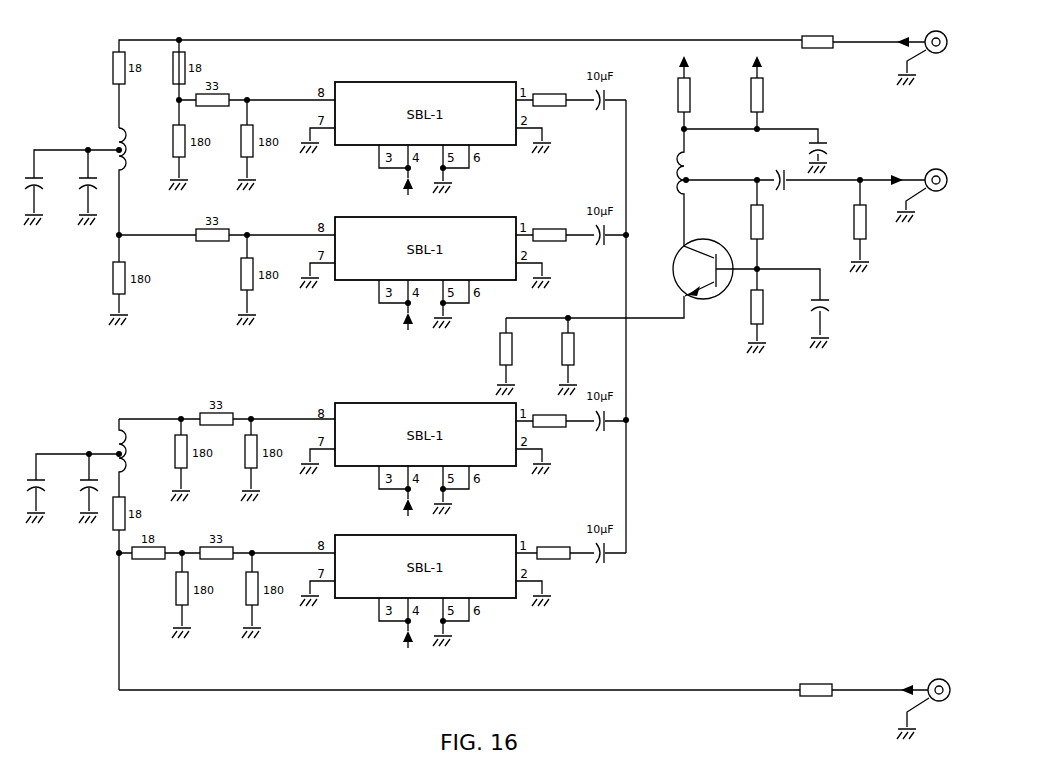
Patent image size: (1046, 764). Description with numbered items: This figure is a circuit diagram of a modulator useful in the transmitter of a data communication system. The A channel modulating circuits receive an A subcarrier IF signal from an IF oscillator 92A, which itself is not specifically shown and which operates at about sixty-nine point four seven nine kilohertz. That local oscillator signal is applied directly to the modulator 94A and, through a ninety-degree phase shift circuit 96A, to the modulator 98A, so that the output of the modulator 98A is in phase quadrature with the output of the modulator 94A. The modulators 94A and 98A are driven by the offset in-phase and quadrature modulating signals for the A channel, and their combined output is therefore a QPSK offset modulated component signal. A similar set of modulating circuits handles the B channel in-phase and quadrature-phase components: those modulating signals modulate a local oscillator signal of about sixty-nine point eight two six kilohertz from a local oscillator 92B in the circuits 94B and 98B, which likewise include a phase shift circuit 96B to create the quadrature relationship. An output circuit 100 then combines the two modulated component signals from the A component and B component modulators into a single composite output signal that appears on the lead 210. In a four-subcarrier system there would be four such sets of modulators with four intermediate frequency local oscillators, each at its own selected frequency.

The modulator 94A is at (488, 82).
The modulator 98A is at (488, 217).
The modulating circuit 98B is at (438, 401).
The modulating circuit 94B is at (488, 535).
The 90° phase shift circuit 96A is at (62, 160).
The phase shift circuit 96B is at (68, 464).
The output circuit 100 is at (846, 278).
The lead 210 is at (931, 168).
The IF oscillator 92A is at (874, 50).
The local oscillator 92B is at (534, 701).